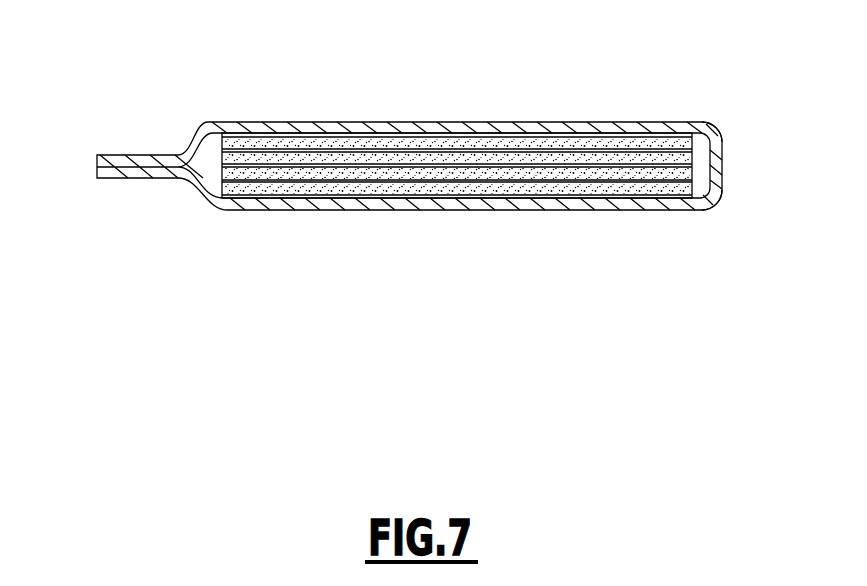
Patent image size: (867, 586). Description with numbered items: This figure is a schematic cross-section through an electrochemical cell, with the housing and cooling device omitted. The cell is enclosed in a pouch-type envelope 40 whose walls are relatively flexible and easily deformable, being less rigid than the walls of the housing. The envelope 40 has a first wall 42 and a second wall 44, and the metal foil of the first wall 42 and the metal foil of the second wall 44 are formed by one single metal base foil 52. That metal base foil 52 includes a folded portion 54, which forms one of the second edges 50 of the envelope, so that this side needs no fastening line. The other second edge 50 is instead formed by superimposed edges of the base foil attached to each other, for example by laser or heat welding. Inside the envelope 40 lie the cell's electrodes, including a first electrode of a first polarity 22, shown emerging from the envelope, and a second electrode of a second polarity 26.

The first electrode of a first polarity 22 is at (201, 138).
The second electrode of a second polarity 26 is at (714, 197).
The envelope 40 is at (431, 153).
The first wall 42 is at (457, 108).
The second wall 44 is at (457, 226).
The second edges 50 is at (747, 121).
The metal base foil 52 is at (607, 125).
The folded portion 54 is at (748, 175).